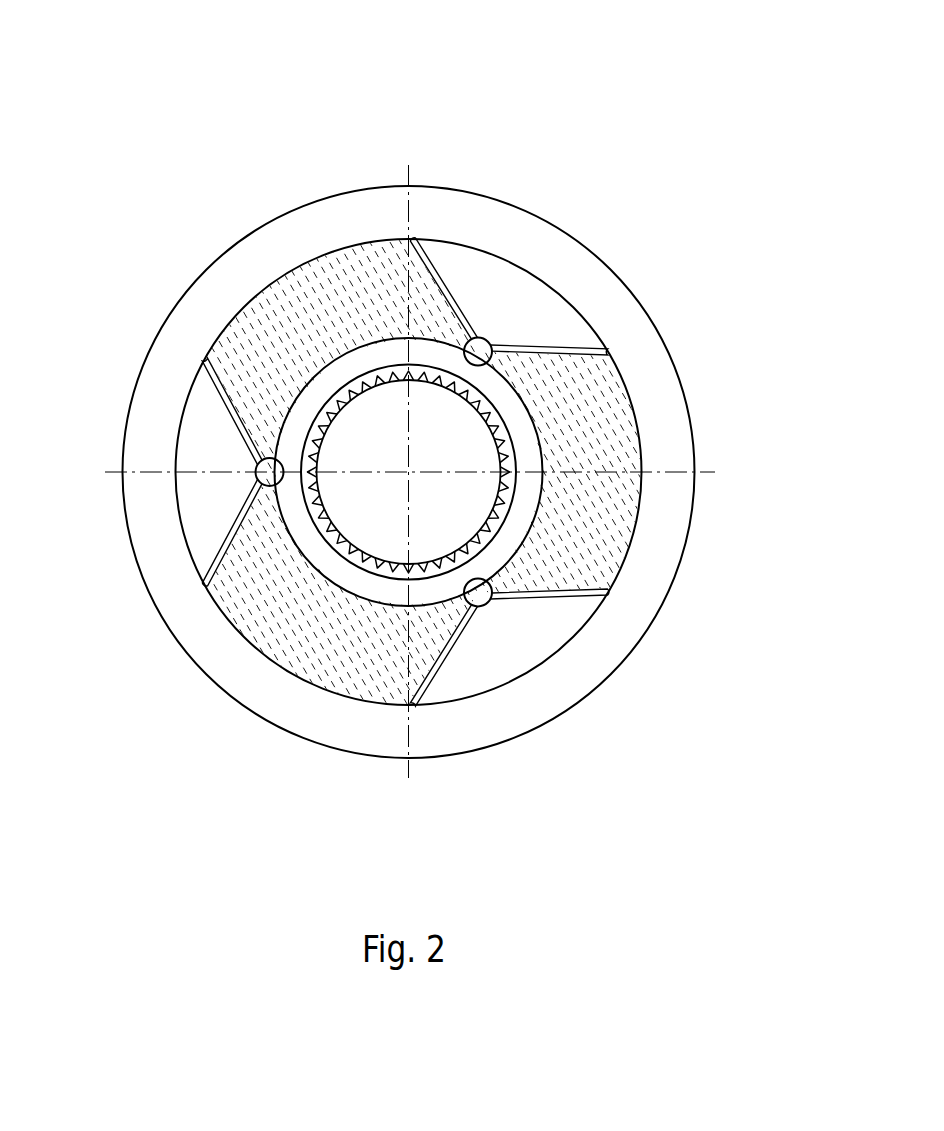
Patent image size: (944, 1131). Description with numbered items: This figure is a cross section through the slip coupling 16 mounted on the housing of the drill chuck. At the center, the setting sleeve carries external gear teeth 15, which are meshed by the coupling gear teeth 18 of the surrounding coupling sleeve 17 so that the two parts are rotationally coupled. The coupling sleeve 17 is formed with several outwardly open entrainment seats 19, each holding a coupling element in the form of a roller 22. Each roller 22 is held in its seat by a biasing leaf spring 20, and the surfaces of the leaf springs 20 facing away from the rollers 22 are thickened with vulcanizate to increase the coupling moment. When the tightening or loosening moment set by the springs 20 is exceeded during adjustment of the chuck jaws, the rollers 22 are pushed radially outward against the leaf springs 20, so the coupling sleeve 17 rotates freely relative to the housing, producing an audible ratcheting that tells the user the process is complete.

The external gear teeth 15 is at (393, 368).
The slip coupling 16 is at (510, 231).
The coupling sleeve 17 is at (368, 588).
The teeth 18 is at (353, 560).
The entrainment seats 19 is at (482, 362).
The biasing leaf springs 20 is at (243, 431).
The rollers 22 is at (270, 458).